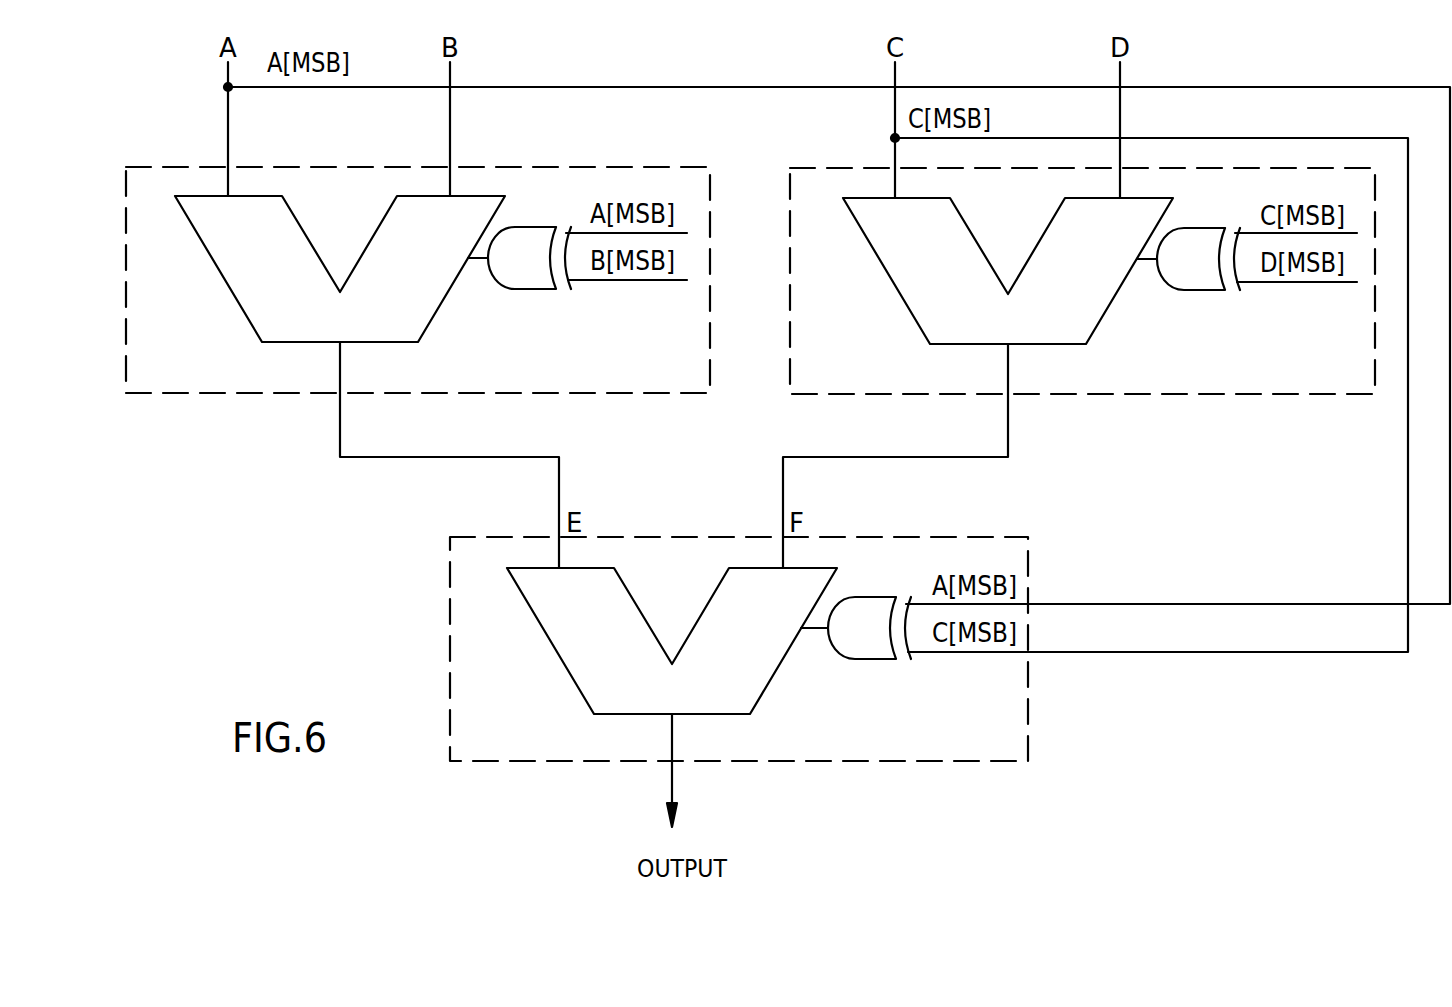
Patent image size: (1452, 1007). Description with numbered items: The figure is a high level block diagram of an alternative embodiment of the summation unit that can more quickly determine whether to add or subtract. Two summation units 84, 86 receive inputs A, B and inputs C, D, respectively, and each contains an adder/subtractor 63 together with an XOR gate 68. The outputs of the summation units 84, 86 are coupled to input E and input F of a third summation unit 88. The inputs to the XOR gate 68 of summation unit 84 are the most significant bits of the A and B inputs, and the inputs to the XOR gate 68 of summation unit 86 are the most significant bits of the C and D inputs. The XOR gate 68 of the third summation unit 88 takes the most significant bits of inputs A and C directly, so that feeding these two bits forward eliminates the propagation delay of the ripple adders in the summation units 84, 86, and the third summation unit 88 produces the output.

The summation unit adder/subtractor 63 is at (442, 307).
The XOR gate 68 is at (519, 226).
The summation unit 84 is at (562, 393).
The summation unit 86 is at (1136, 394).
The third summation unit 88 is at (1028, 722).